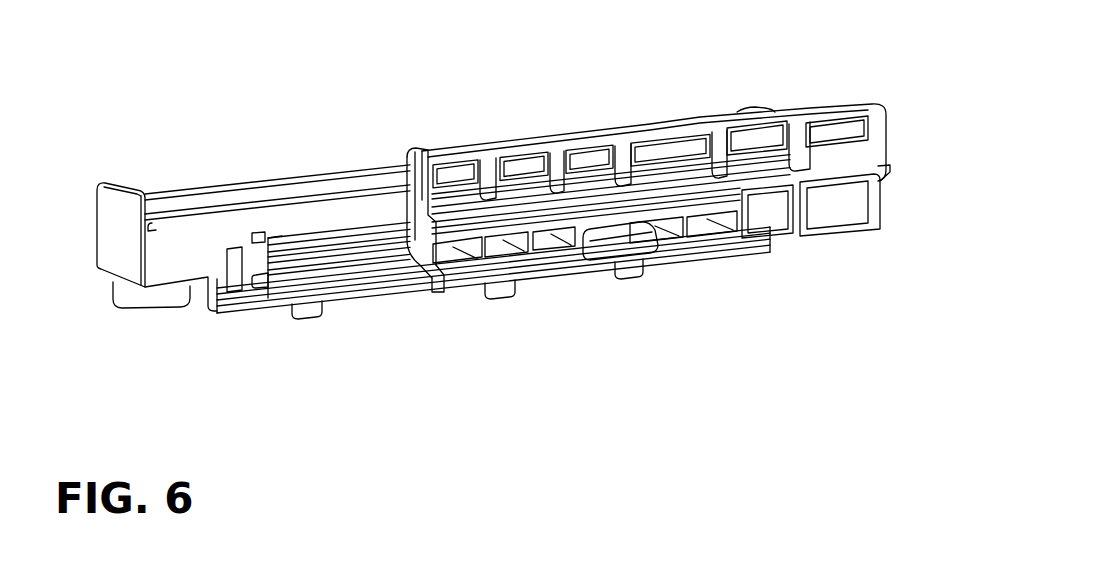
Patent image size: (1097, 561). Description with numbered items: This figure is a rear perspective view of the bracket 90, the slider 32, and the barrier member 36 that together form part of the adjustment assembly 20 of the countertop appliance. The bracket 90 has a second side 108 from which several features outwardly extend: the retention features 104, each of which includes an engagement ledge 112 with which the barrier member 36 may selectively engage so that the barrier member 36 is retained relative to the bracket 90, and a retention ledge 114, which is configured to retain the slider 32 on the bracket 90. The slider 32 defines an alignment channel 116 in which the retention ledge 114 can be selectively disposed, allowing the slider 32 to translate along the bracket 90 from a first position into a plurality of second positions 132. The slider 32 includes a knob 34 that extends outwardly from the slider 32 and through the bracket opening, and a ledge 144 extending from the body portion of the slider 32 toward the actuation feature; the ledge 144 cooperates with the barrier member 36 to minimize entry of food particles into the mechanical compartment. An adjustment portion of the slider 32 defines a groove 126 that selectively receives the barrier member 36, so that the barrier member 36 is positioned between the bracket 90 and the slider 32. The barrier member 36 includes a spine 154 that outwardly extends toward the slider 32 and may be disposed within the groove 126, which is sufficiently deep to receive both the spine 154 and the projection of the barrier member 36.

The adjustment assembly 20 is at (88, 119).
The bracket 90 is at (137, 188).
The second side 108 is at (157, 258).
The retention ledge 114 is at (200, 212).
The barrier member 36 is at (343, 178).
The retention features 104 is at (255, 233).
The engagement ledge 112 is at (292, 236).
The spine 154 is at (333, 255).
The alignment channel 116 is at (407, 198).
The groove 126 is at (420, 240).
The second positions 132 is at (558, 118).
The slider 32 is at (685, 122).
The ledge 144 is at (838, 172).
The knob 34 is at (588, 252).